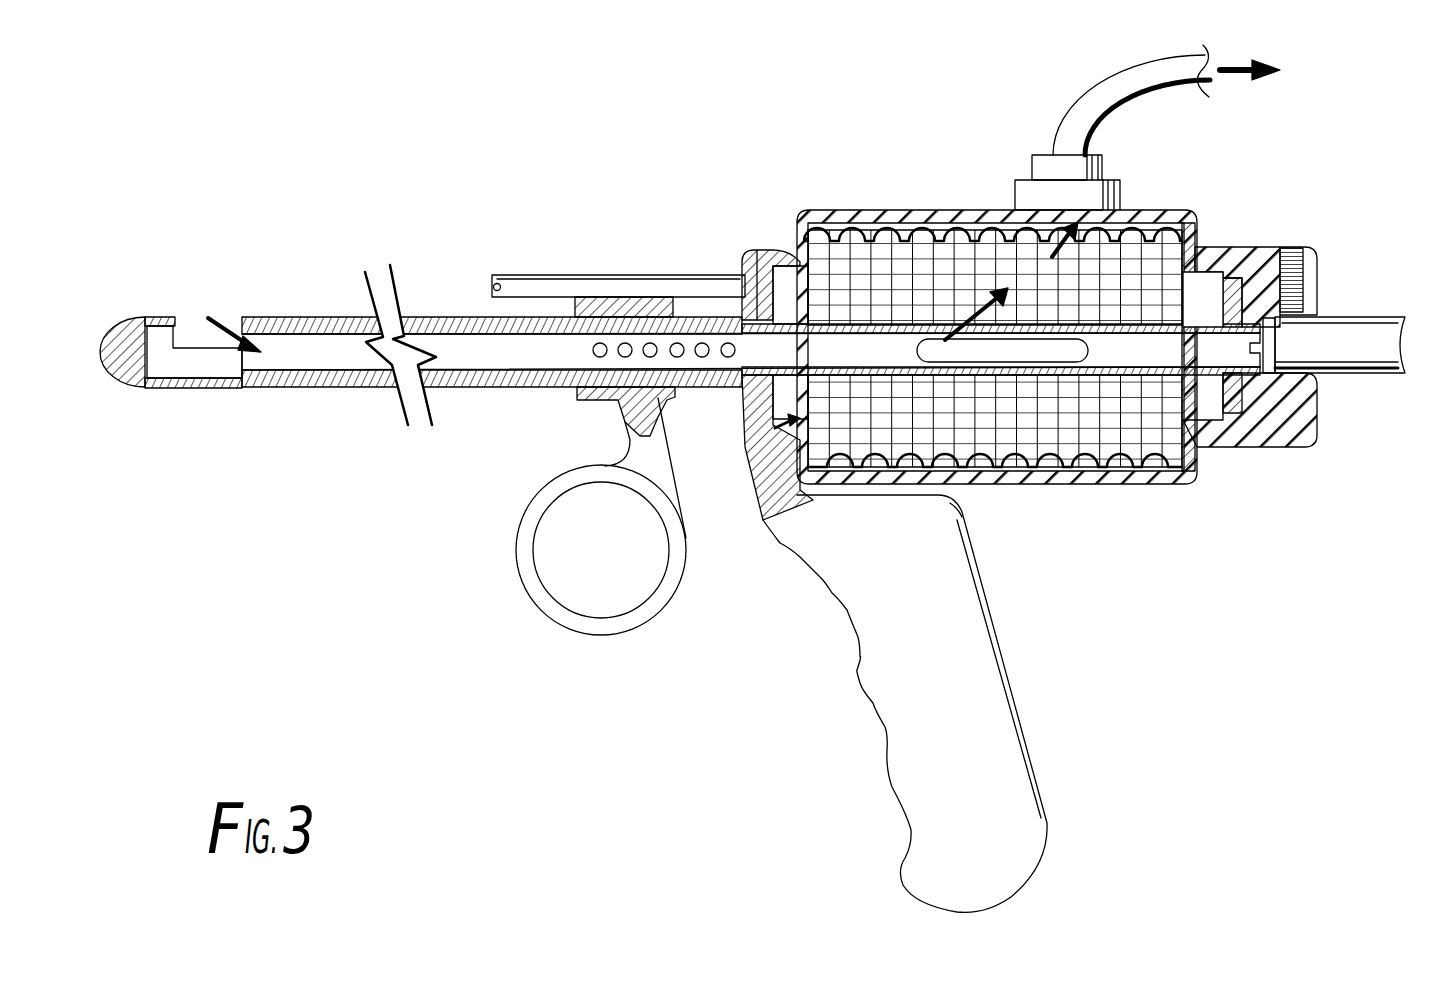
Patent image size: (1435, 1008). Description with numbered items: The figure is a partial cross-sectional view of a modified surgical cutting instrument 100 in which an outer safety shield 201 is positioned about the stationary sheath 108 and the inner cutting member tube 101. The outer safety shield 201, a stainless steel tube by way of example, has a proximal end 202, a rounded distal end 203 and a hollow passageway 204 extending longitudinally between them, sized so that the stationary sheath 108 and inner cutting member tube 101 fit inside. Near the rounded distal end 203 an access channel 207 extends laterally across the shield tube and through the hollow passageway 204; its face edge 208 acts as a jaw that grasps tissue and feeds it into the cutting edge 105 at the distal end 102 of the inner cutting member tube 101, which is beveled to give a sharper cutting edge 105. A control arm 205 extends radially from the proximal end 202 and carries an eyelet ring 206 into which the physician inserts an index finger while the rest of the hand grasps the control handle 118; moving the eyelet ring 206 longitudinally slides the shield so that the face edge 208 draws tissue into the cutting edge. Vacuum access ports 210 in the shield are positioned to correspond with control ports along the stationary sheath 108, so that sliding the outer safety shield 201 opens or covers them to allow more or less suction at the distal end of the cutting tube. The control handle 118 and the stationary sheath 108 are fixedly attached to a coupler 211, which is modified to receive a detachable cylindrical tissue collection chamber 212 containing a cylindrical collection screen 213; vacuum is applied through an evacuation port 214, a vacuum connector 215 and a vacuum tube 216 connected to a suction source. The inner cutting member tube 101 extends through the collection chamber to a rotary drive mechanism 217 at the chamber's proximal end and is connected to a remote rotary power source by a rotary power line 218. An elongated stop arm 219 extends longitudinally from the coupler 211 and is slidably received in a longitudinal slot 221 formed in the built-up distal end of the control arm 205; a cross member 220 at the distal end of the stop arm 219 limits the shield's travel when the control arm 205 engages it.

The surgical cutting instrument 100 is at (727, 190).
The inner cutting member tube 101 is at (297, 317).
The distal end of the inner cutting member tube 102 is at (219, 295).
The cutting edge 105 is at (242, 388).
The stationary sheath 108 is at (257, 330).
The control handle 118 is at (1005, 660).
The outer safety shield 201 is at (343, 388).
The proximal end 202 is at (563, 387).
The rounded distal end 203 is at (122, 388).
The hollow passageway 204 is at (168, 365).
The control arm 205 is at (625, 431).
The eyelet ring 206 is at (637, 612).
The access channel 207 is at (202, 348).
The face edge 208 is at (183, 348).
The vacuum access ports 210 is at (683, 358).
The coupler 211 is at (765, 248).
The tissue collection chamber 212 is at (887, 211).
The cylindrical collection screen 213 is at (1145, 248).
The evacuation port 214 is at (1077, 218).
The vacuum connector 215 is at (1020, 180).
The vacuum tube 216 is at (1133, 97).
The rotary drive mechanism 217 is at (1250, 245).
The rotary power line 218 is at (1333, 316).
The elongated stop arm 219 is at (570, 273).
The cross member 220 is at (494, 282).
The longitudinal slot 221 is at (643, 300).